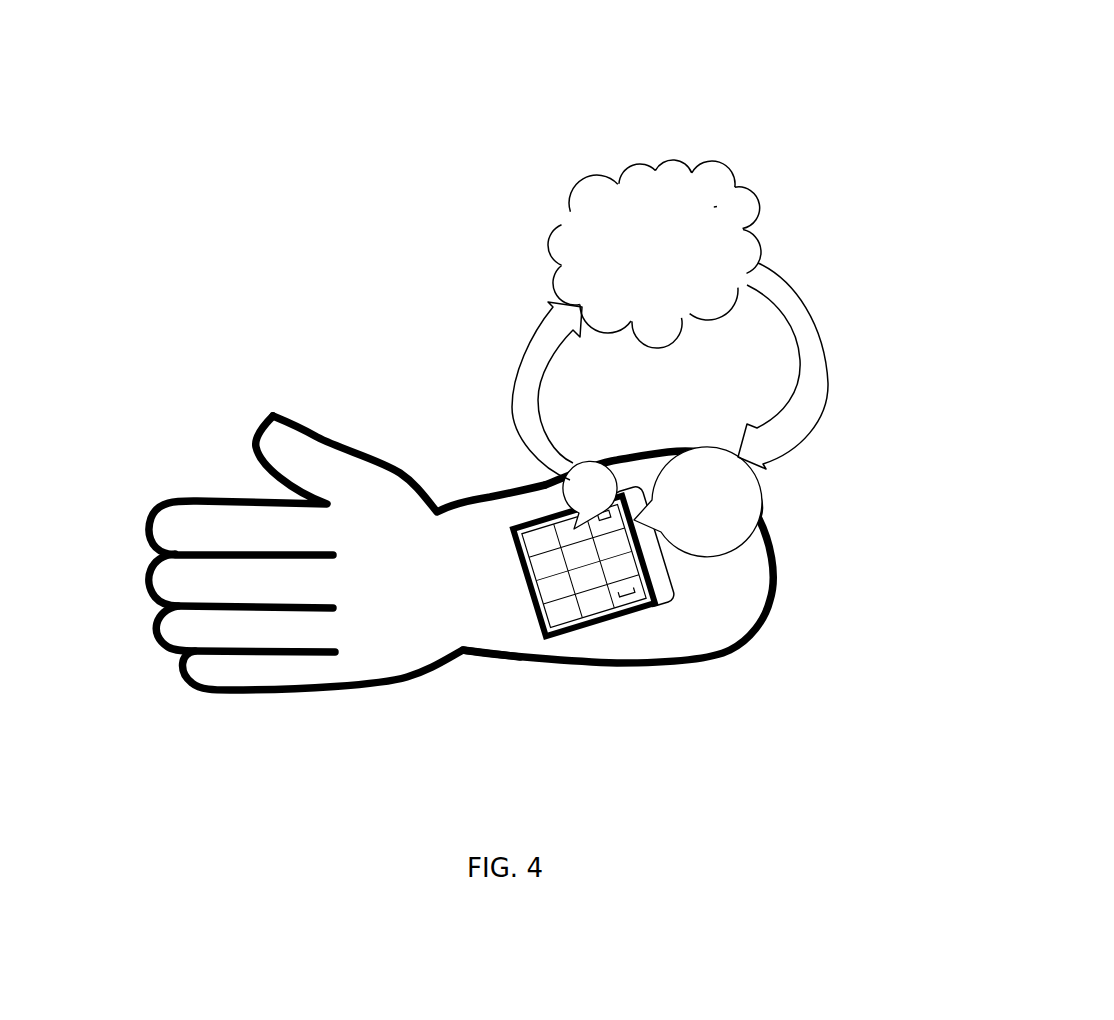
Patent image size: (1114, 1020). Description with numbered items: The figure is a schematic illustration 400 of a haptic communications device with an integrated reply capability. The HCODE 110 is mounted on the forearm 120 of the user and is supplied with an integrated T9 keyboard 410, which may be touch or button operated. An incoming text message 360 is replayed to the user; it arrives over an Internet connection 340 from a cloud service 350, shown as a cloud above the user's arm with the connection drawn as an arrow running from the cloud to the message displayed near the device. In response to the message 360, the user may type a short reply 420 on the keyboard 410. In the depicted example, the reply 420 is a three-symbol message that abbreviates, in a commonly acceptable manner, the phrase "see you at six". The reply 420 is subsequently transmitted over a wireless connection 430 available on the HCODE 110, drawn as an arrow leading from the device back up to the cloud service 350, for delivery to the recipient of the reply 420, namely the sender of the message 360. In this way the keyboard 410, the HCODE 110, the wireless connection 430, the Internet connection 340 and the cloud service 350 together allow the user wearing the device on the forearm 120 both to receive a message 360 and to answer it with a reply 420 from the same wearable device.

The schematic illustration 400 is at (1033, 148).
The HCODE 110 is at (538, 517).
The forearm 120 is at (697, 603).
The T9 keyboard 410 is at (563, 627).
The reply 420 is at (588, 463).
The text message 360 is at (765, 503).
The cloud service 350 is at (580, 178).
The wireless connection 430 is at (533, 330).
The Internet connection 340 is at (827, 302).